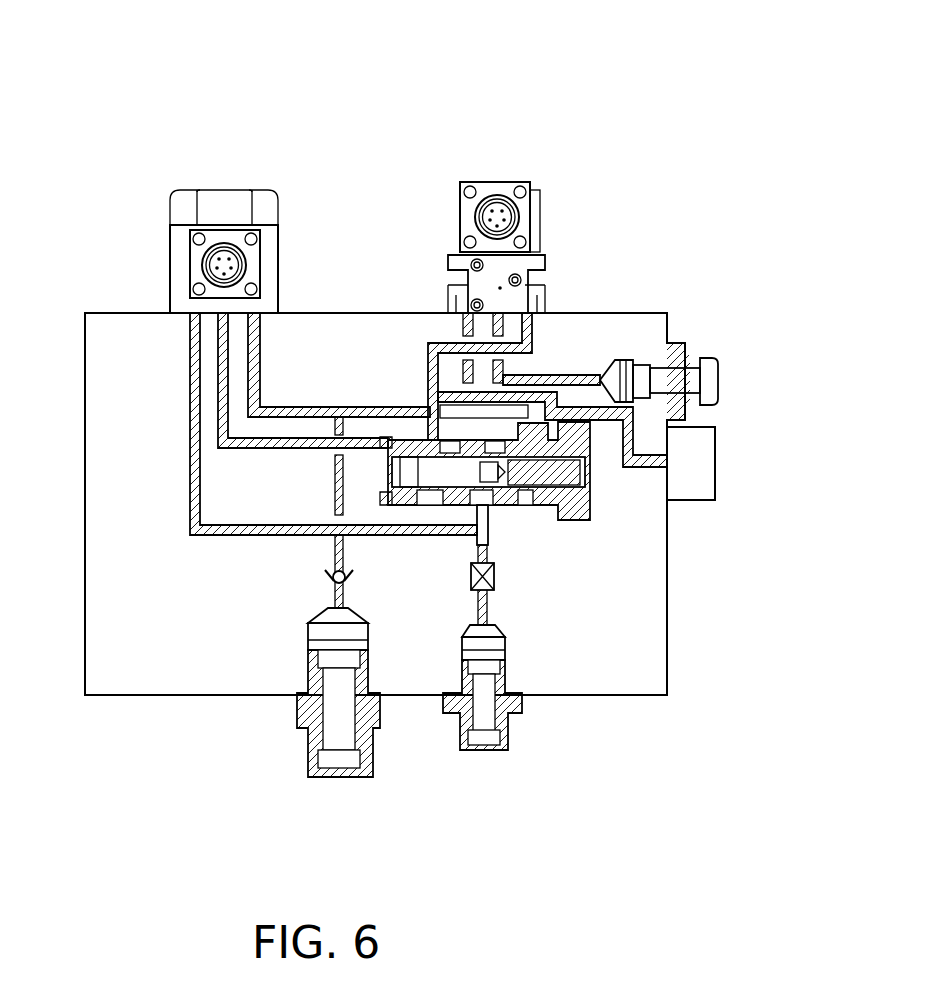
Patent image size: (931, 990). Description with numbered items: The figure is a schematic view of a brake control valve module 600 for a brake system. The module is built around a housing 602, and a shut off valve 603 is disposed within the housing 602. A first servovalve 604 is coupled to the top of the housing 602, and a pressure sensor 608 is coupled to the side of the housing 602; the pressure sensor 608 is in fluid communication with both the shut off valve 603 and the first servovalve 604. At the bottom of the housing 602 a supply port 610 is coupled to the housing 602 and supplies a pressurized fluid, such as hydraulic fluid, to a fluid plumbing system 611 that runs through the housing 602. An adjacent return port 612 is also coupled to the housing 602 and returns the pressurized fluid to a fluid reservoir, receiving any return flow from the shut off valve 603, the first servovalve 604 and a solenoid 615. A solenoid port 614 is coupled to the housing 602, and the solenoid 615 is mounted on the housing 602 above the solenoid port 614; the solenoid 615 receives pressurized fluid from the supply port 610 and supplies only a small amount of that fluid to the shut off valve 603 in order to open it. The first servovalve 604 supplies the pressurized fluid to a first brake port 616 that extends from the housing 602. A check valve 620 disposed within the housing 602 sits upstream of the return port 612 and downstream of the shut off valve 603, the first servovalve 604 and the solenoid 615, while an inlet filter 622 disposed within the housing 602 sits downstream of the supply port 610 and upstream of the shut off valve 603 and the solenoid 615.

The brake control valve module 600 is at (652, 62).
The housing 602 is at (597, 313).
The shut off valve 603 is at (585, 498).
The first servovalve 604 is at (500, 180).
The pressure sensor 608 is at (718, 465).
The supply port 610 is at (490, 752).
The fluid plumbing system 611 is at (190, 490).
The return port 612 is at (330, 762).
The solenoid port 614 is at (190, 282).
The solenoid 615 is at (212, 188).
The first brake port 616 is at (705, 358).
The check valve 620 is at (334, 567).
The inlet filter 622 is at (497, 582).